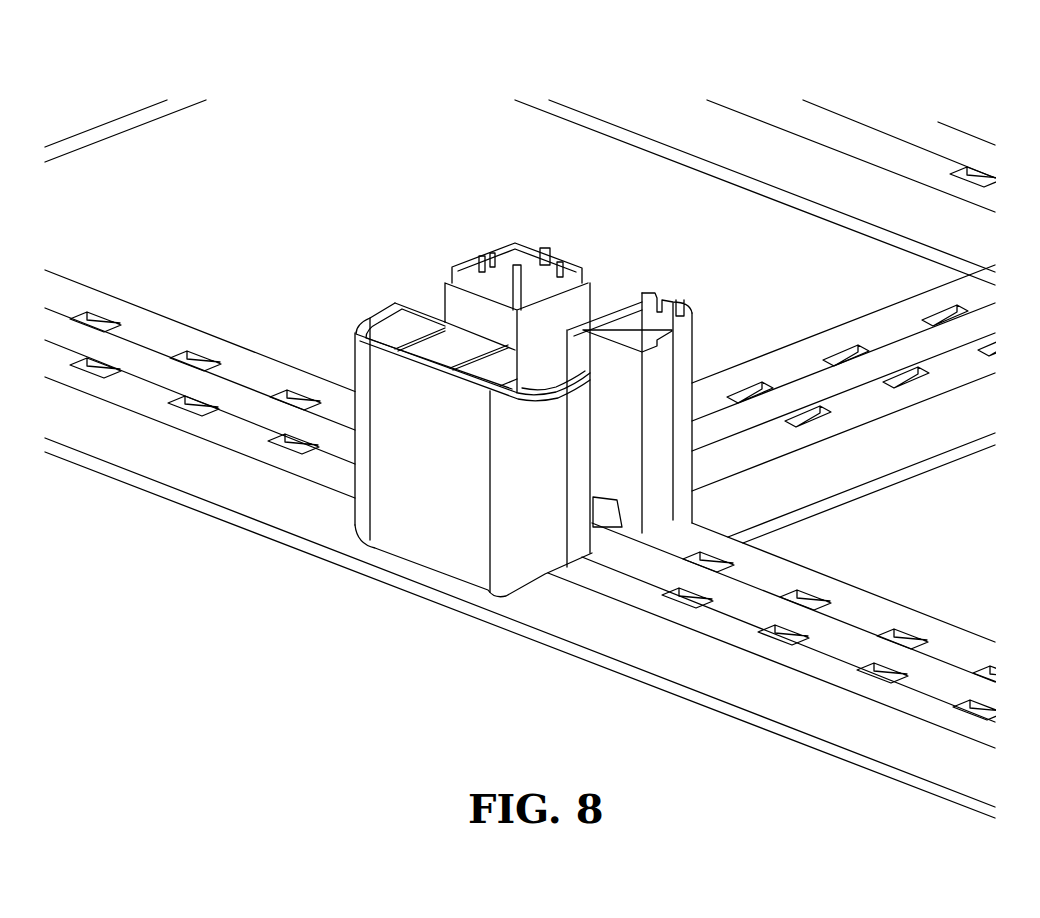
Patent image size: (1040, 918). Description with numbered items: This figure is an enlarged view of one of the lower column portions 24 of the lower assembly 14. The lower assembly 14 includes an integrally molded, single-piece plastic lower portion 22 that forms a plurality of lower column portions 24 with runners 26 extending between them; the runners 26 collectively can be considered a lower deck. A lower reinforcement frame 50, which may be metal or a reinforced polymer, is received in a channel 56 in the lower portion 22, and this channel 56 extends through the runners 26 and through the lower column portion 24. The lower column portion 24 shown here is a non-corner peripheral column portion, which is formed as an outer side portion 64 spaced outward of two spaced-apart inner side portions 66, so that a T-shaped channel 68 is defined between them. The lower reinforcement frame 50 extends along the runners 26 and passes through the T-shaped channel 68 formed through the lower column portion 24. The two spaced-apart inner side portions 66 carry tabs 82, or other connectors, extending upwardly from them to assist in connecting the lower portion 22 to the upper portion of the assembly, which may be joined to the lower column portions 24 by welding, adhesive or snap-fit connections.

The lower assembly 14 is at (284, 630).
The lower portion 22 is at (592, 663).
The lower column portion 24 is at (372, 505).
The runner 26 is at (170, 500).
The lower reinforcement frame 50 is at (748, 580).
The channel 56 is at (838, 647).
The outer side portion 64 is at (432, 540).
The inner side portion 66 is at (593, 303).
The T-shaped channel 68 is at (483, 312).
The tab 82 is at (517, 247).